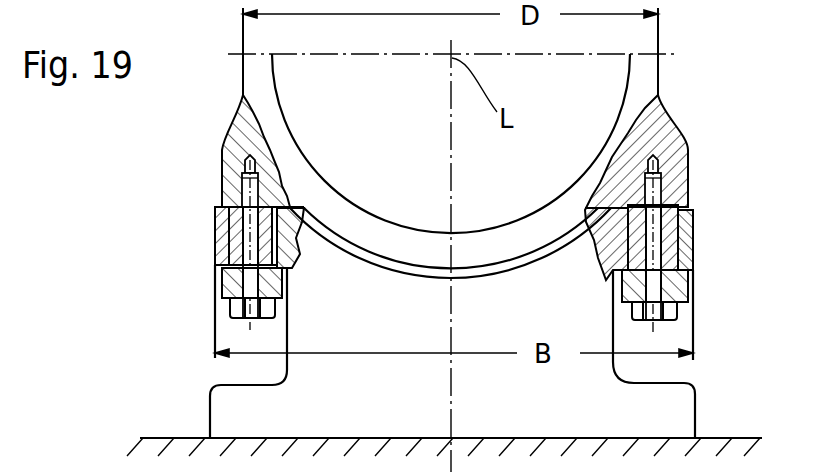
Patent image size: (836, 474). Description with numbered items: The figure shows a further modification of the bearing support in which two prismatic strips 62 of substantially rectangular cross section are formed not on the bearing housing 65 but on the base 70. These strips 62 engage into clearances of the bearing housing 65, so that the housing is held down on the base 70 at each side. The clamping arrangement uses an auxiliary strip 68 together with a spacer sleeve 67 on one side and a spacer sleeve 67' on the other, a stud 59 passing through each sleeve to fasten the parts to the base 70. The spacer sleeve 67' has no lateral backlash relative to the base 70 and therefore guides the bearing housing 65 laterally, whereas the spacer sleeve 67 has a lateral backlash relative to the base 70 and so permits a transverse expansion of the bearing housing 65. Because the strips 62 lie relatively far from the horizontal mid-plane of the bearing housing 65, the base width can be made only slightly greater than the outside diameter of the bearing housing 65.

The stud bolt 59 is at (240, 324).
The prismatic strip 62 is at (218, 252).
The bearing housing 65 is at (258, 98).
The spacer sleeve 67 is at (197, 226).
The spacer sleeve 67' is at (709, 249).
The auxiliary strip 68 is at (220, 290).
The base 70 is at (673, 400).